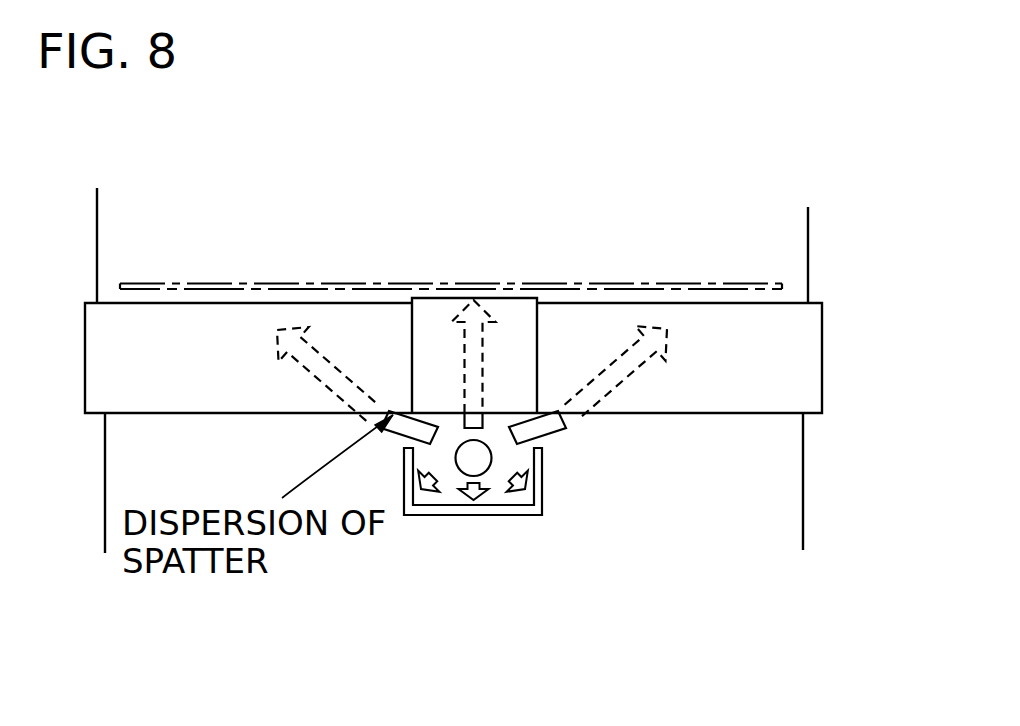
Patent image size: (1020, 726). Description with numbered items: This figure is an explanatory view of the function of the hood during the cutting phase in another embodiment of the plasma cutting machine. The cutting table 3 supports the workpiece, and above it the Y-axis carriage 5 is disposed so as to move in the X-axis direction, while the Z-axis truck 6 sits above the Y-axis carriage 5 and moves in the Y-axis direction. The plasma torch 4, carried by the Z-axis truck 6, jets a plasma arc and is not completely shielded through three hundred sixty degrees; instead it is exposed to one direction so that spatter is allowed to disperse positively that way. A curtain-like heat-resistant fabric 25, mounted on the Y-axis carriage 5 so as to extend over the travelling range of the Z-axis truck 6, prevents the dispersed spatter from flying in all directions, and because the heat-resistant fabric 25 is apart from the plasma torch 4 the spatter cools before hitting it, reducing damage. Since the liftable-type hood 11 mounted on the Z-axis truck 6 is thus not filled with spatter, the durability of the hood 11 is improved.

The cutting table 3 is at (803, 457).
The plasma torch 4 is at (492, 449).
The Y-axis carriage 5 is at (822, 333).
The Z-axis truck 6 is at (412, 340).
The hood 11 is at (542, 505).
The heat-resistant fabric 25 is at (499, 285).